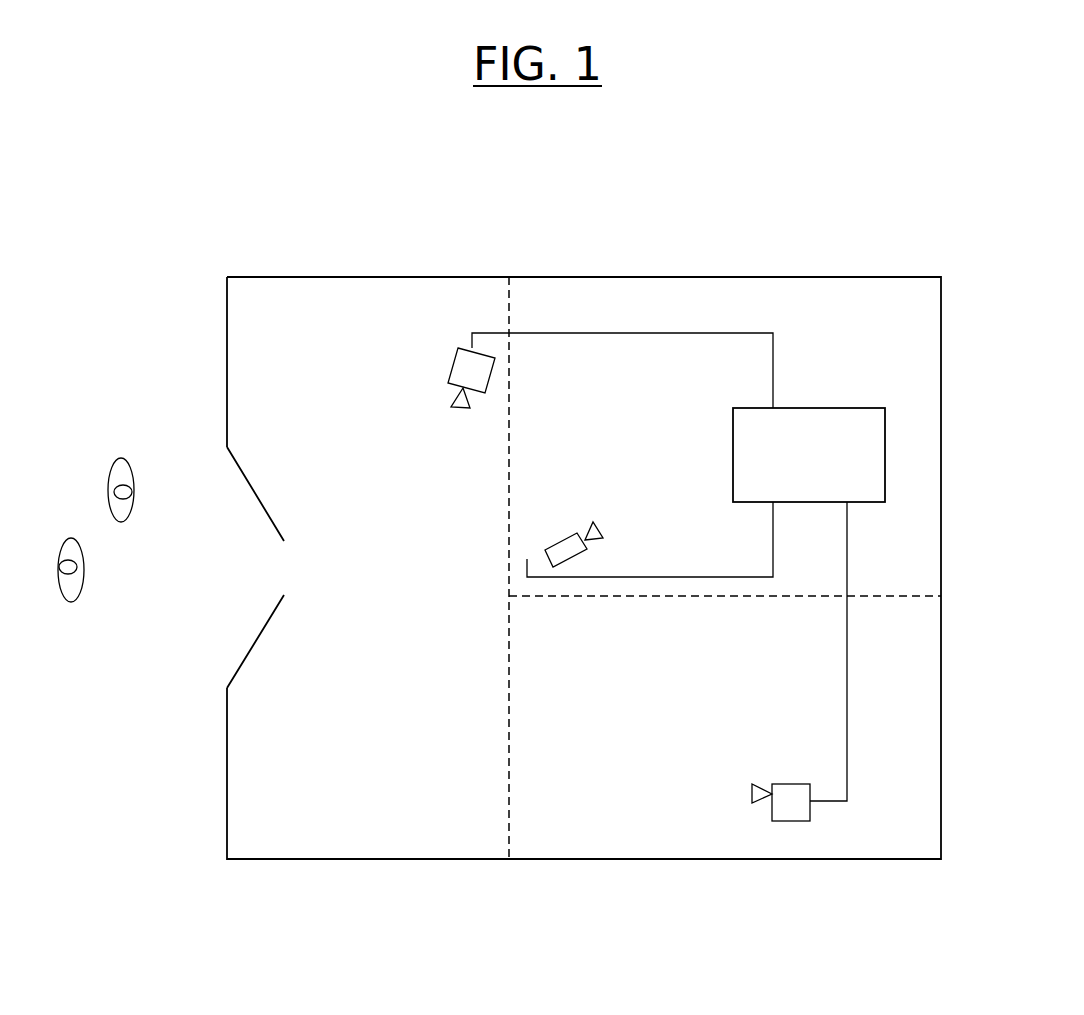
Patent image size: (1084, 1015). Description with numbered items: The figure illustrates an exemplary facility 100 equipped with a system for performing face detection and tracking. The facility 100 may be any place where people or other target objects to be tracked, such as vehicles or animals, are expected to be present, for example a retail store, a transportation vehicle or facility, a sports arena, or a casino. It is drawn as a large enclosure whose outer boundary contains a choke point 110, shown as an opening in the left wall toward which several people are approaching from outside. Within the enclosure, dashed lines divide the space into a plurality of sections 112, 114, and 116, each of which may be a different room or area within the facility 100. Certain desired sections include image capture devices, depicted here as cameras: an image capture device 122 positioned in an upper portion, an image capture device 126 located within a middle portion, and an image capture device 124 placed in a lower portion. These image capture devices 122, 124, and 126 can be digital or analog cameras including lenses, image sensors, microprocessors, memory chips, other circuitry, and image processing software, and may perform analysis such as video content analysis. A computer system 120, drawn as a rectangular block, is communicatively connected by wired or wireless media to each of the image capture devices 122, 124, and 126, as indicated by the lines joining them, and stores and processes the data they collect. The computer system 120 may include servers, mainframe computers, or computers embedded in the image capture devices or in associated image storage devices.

The facility 100 is at (200, 175).
The choke point 110 is at (265, 577).
The section 112 is at (325, 822).
The section 114 is at (550, 822).
The section 116 is at (648, 297).
The computer system 120 is at (845, 400).
The image capture device 122 is at (448, 372).
The image capture device 124 is at (793, 782).
The image capture device 126 is at (558, 540).